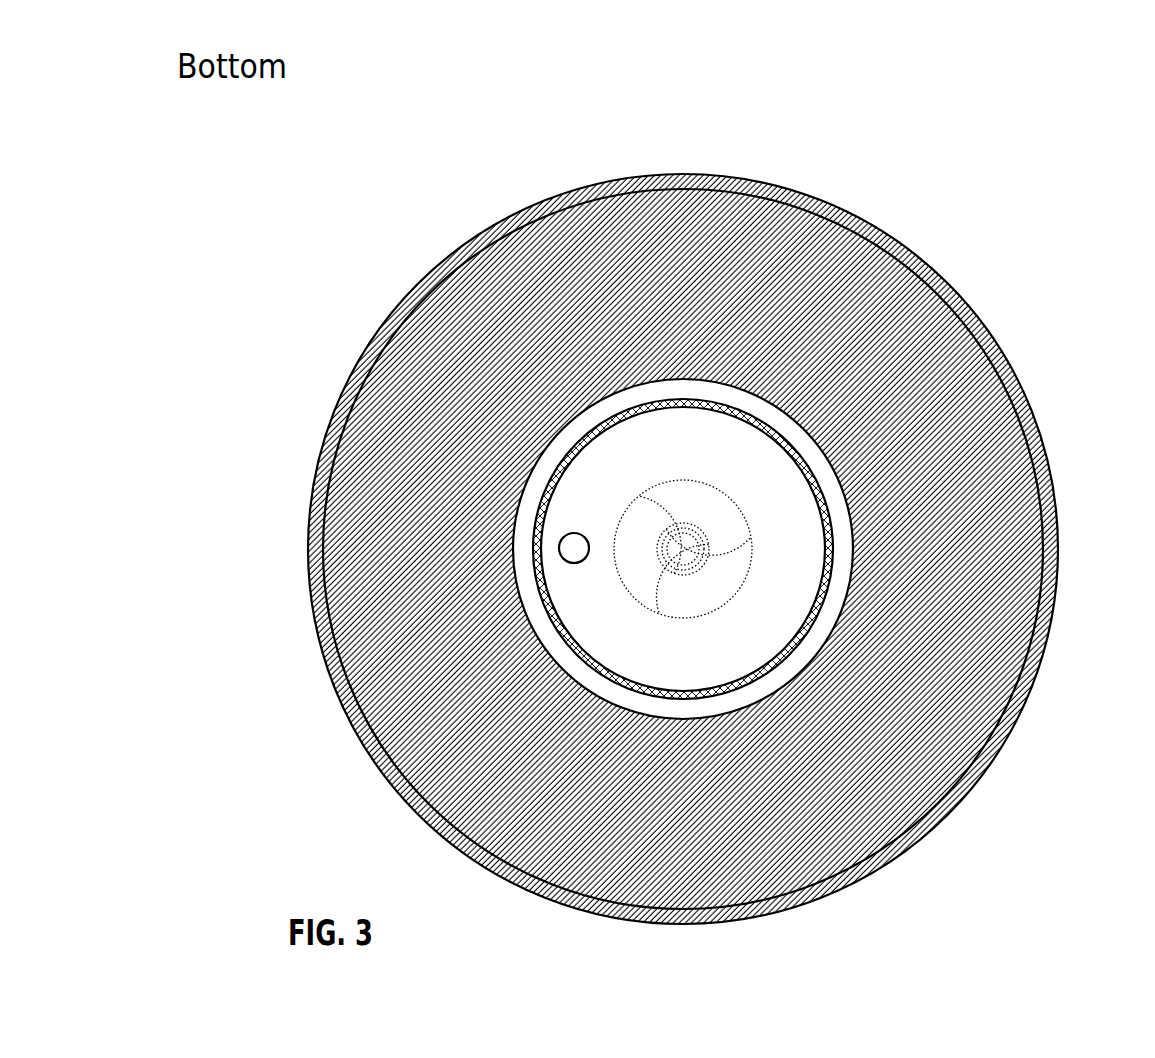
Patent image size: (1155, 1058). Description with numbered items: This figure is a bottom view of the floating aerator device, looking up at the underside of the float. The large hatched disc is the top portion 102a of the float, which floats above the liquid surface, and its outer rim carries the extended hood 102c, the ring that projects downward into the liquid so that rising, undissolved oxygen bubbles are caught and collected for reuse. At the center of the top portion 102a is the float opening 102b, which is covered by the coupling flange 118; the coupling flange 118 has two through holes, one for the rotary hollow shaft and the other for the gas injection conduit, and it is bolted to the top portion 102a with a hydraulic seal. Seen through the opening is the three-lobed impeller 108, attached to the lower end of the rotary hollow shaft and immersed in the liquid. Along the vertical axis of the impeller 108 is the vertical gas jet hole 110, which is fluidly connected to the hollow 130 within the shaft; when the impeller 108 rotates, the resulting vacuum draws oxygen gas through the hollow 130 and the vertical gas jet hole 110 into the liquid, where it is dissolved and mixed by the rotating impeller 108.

The top portion 102a is at (898, 308).
The float opening 102b is at (802, 435).
The extended hood 102c is at (898, 248).
The impeller 108 is at (753, 550).
The vertical gas jet hole 110 is at (560, 537).
The coupling flange 118 is at (818, 483).
The hollow 130 is at (672, 536).